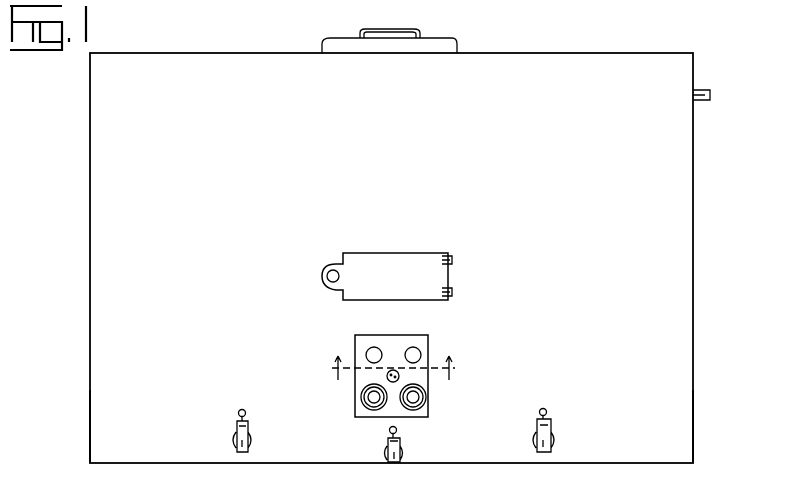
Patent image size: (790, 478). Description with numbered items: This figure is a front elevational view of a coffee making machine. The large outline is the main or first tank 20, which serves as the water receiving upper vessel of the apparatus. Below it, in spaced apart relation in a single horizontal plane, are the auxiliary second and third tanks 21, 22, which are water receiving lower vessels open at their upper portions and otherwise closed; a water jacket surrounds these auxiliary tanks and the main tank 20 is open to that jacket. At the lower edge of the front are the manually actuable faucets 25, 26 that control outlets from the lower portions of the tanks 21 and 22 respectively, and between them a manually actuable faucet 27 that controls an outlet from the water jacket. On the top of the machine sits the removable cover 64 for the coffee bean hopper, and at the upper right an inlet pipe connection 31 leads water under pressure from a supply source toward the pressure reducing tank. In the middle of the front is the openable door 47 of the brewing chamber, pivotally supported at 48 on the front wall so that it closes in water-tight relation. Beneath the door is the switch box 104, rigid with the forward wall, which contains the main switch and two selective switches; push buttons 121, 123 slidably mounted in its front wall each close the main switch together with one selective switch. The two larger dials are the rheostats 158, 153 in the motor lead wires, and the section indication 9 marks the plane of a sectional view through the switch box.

The main or first tank 20 is at (120, 138).
The auxiliary or second tank 21 is at (118, 384).
The auxiliary or third tank 22 is at (687, 394).
The removable cover 64 is at (452, 45).
The inlet pipe connection 31 is at (703, 92).
The openable door 47 is at (412, 260).
The pivot 48 is at (450, 258).
The switch box 104 is at (388, 343).
The push button 121 is at (372, 350).
The push button 123 is at (415, 350).
The rheostat 158 is at (372, 398).
The rheostat 153 is at (415, 400).
The section line 9- 9 is at (393, 381).
The manually actuable faucet 25 is at (237, 428).
The manually actuable faucet 26 is at (550, 425).
The manually actuable faucet 27 is at (401, 446).